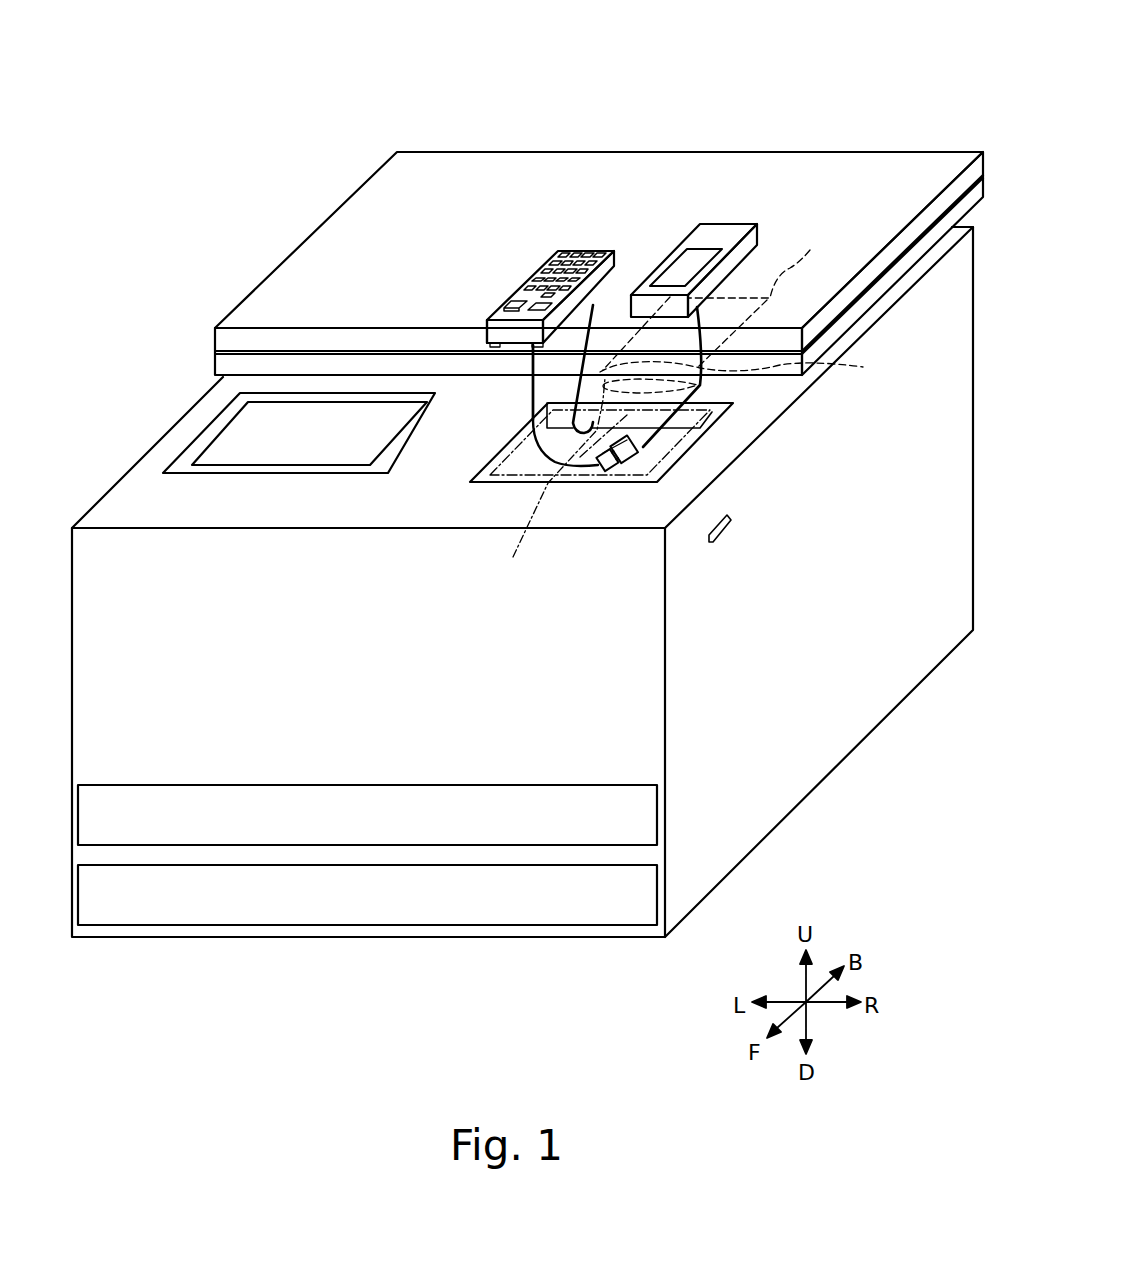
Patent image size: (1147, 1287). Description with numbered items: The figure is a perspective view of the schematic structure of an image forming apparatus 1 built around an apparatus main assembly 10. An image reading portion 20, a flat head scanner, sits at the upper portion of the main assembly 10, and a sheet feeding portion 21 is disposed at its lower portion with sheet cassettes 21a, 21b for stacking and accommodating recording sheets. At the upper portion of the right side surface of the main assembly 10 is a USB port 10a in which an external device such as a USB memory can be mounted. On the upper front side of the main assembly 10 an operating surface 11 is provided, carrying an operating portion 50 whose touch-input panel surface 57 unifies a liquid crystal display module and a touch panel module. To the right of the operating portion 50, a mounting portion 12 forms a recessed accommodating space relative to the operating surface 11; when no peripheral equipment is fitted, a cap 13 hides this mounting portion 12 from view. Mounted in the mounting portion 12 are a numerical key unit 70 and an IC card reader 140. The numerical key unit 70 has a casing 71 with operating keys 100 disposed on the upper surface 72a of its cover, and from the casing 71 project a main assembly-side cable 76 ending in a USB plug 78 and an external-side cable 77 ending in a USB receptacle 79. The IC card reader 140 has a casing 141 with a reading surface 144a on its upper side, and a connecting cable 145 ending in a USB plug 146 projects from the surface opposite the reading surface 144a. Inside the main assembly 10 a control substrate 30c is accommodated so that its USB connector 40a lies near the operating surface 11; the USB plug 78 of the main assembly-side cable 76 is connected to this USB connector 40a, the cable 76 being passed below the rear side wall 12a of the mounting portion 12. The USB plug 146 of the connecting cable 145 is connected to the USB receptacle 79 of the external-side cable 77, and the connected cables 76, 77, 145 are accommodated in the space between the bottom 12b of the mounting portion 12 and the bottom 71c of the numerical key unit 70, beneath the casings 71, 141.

The image forming apparatus 1 is at (290, 60).
The apparatus main assembly 10 is at (842, 730).
The USB port 10a is at (722, 535).
The operating surface 11 is at (437, 520).
The mounting portion 12 is at (670, 453).
The side wall 12a is at (700, 440).
The bottom 12b is at (520, 452).
The cap 13 is at (550, 482).
The image reading portion 20 is at (460, 158).
The sheet feeding portion 21 is at (143, 968).
The sheet cassette 21a is at (440, 800).
The sheet cassette 21b is at (468, 915).
The control substrate 30c is at (721, 297).
The USB connector 40a is at (756, 369).
The operating portion 50 is at (183, 502).
The panel surface 57 is at (333, 457).
The numerical key unit 70 is at (559, 190).
The casing 71 is at (588, 252).
The bottom 71c is at (456, 349).
The upper surface 72a is at (520, 296).
The main assembly-side cable 76 is at (600, 307).
The external-side cable 77 is at (527, 382).
The USB plug 78 is at (697, 385).
The USB receptacle 79 is at (617, 473).
The operating keys 100 is at (515, 254).
The IC card reader 140 is at (724, 170).
The casing 141 is at (733, 227).
The reading surface 144a is at (683, 263).
The connecting cable 145 is at (697, 315).
The USB plug 146 is at (633, 478).